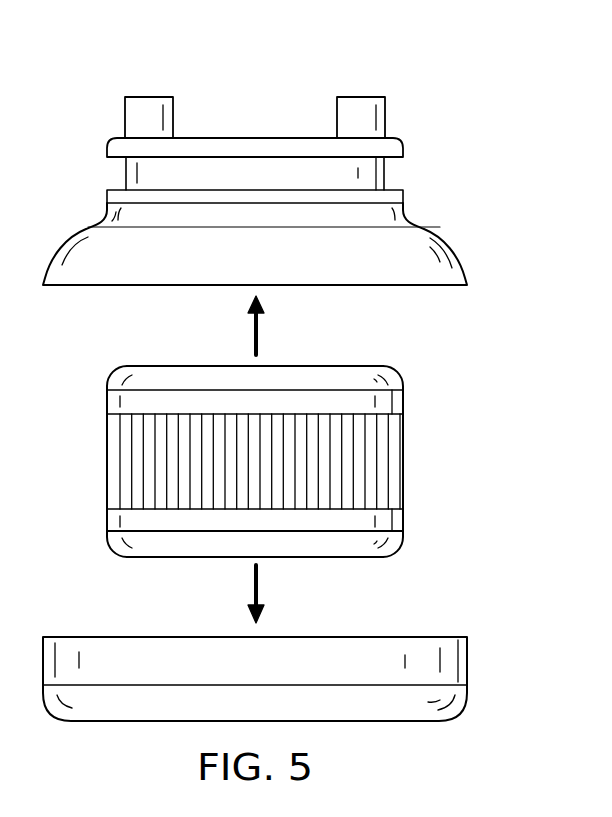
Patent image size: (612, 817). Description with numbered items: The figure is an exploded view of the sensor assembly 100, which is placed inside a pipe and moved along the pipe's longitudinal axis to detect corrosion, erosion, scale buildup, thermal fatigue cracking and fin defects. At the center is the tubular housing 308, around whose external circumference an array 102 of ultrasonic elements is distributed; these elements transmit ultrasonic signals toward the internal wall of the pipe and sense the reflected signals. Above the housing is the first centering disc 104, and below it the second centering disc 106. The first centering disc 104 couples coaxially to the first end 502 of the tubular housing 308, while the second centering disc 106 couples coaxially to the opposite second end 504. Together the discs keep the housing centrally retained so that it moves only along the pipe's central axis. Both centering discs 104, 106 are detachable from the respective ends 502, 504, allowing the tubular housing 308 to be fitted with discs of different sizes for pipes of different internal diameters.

The sensor assembly 100 is at (97, 73).
The first centering disc 104 is at (436, 230).
The array of ultrasonic elements 102 is at (403, 462).
The tubular housing 308 is at (158, 366).
The first end of tubular housing 502 is at (322, 366).
The second end of tubular housing 504 is at (322, 557).
The second centering disc 106 is at (467, 662).